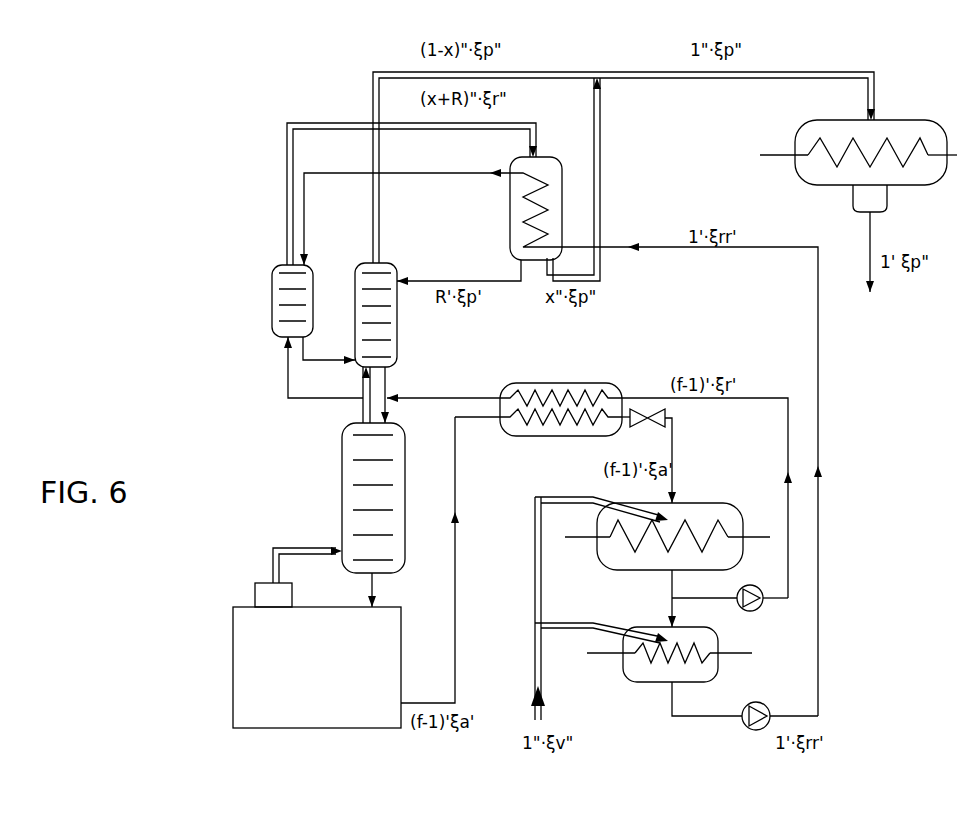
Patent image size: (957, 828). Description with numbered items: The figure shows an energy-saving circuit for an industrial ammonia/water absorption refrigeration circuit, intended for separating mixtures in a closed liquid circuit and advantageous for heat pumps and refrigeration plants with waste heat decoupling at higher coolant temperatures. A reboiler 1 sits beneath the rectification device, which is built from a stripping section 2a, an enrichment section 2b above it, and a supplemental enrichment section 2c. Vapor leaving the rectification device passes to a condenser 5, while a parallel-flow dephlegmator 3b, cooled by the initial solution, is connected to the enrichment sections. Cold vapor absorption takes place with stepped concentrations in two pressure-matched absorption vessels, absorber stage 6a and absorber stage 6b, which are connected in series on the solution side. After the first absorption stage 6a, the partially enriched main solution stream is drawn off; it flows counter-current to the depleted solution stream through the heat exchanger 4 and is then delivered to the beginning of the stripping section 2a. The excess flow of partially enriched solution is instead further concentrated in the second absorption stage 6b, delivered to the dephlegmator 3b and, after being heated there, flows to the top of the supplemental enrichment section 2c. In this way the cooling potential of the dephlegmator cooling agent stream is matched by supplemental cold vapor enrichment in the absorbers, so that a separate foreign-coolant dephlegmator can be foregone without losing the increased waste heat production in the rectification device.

The reboiler 1 is at (255, 647).
The stripping section of rectification device 2a is at (355, 490).
The enrichment section of rectification device 2b is at (368, 336).
The supplemental enrichment section of rectification device 2c is at (278, 298).
The parallel-flow dephlegmator 3b is at (510, 238).
The heat exchanger 4 is at (581, 370).
The condenser 5 is at (815, 168).
The absorber stage 1 6a is at (716, 548).
The absorber stage 2 6b is at (710, 668).